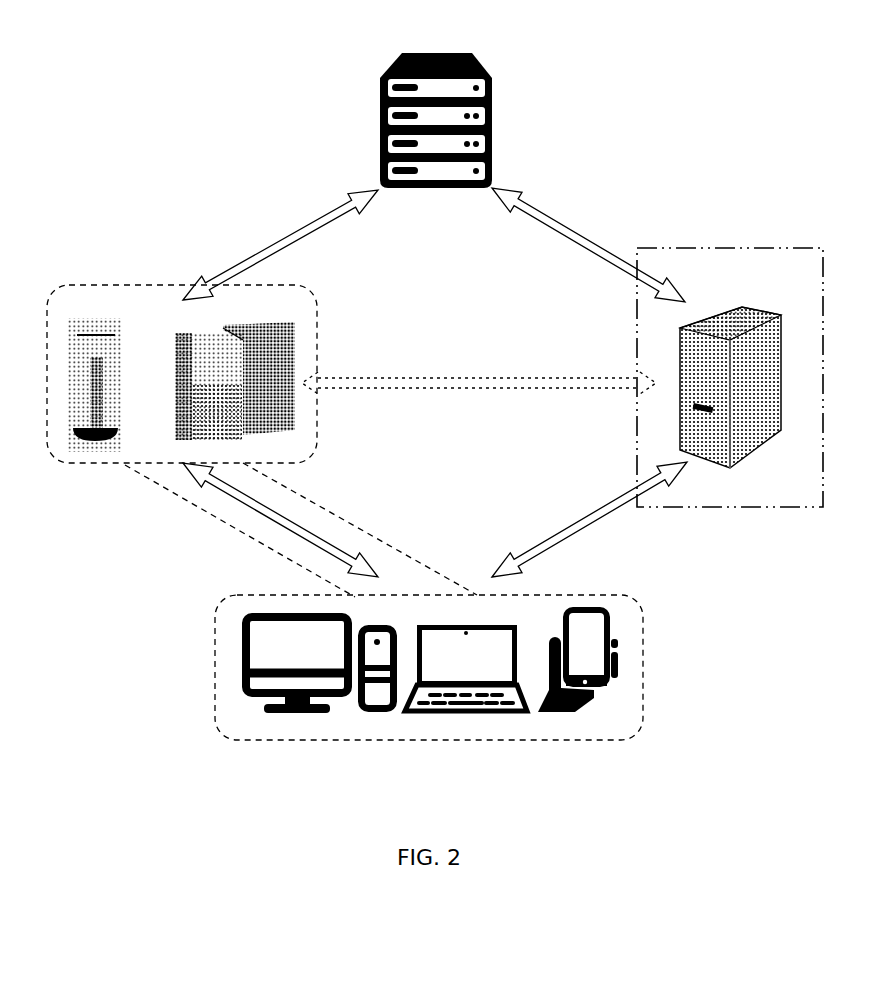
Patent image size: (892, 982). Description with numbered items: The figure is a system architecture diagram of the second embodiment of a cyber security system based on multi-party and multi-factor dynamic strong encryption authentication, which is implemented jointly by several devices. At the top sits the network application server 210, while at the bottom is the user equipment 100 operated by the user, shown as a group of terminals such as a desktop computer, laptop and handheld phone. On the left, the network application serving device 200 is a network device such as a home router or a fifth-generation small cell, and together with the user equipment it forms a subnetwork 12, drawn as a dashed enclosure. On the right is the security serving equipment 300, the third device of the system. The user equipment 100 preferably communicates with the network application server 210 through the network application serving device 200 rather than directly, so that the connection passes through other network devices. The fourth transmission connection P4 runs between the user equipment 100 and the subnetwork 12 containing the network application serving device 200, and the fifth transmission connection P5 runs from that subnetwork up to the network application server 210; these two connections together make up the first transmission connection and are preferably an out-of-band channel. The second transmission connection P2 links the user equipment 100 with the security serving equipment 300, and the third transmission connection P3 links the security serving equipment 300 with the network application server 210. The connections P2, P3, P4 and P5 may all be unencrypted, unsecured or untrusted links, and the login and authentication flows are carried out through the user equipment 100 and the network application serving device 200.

The network application server 210 is at (436, 107).
The subnetwork 12 is at (318, 333).
The network application serving device 200 is at (95, 375).
The security serving equipment 300 is at (730, 377).
The user equipment 100 is at (429, 689).
The second transmission connection P2 is at (589, 519).
The third transmission connection P3 is at (588, 245).
The fourth transmission connection P4 is at (280, 520).
The fifth transmission connection P5 is at (280, 245).